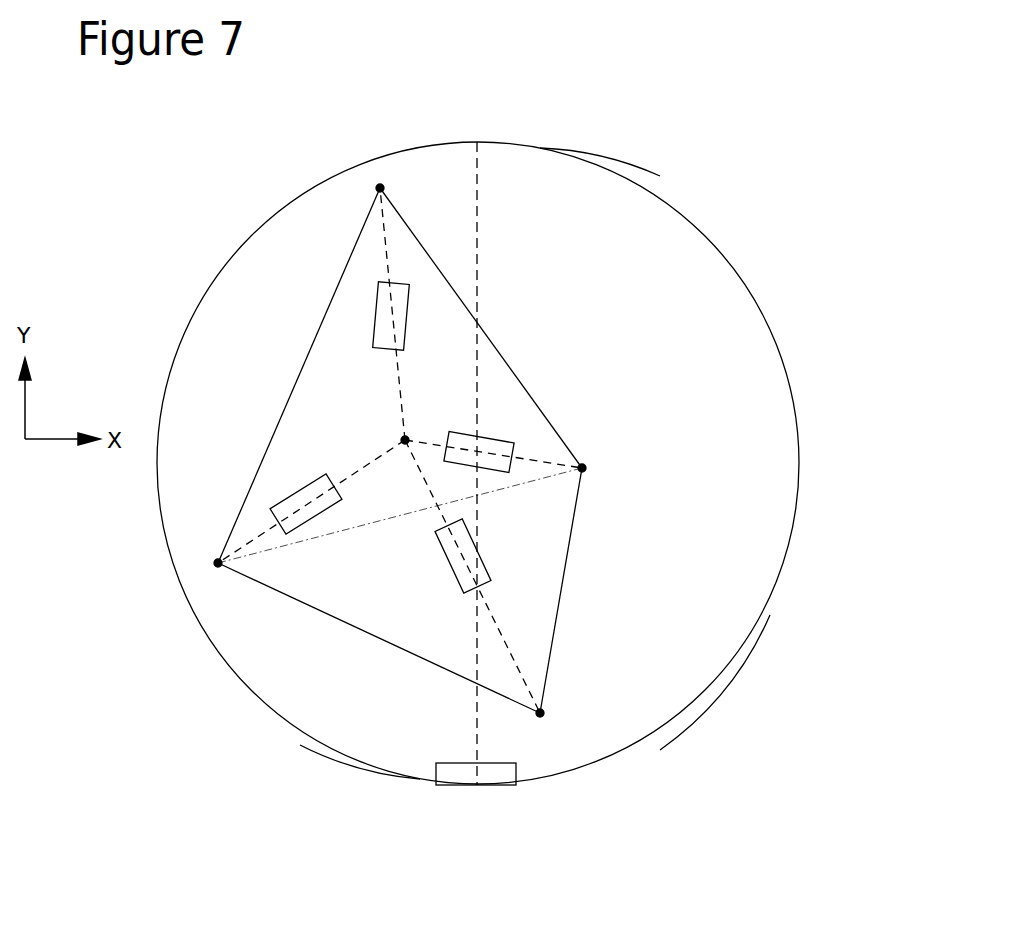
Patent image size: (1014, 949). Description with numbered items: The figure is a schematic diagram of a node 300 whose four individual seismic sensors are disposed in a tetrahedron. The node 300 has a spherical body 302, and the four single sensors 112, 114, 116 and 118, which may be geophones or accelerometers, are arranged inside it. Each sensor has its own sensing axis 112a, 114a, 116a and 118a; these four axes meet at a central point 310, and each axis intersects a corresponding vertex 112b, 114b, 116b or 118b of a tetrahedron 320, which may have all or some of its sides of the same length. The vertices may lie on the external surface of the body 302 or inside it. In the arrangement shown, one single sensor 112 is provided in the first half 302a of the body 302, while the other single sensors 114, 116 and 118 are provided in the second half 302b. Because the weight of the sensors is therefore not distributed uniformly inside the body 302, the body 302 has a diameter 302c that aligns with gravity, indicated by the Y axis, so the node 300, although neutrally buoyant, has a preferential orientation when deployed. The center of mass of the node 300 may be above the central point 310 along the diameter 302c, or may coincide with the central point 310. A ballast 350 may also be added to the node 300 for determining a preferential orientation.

The node 300 is at (505, 98).
The spherical body 302 is at (765, 395).
The first half of the body 302a is at (572, 177).
The second half of the body 302b is at (717, 652).
The diameter 302c is at (475, 727).
The central point 310 is at (403, 444).
The tetrahedron 320 is at (548, 558).
The ballast 350 is at (495, 781).
The single sensor 112 is at (397, 307).
The sensing axis 112a is at (400, 377).
The vertex 112b is at (384, 185).
The single sensor 114 is at (297, 502).
The sensing axis 114a is at (368, 463).
The vertex 114b is at (217, 567).
The single sensor 116 is at (460, 562).
The sensing axis 116a is at (515, 665).
The vertex 116b is at (544, 709).
The single sensor 118 is at (483, 437).
The sensing axis 118a is at (540, 463).
The vertex 118b is at (586, 468).